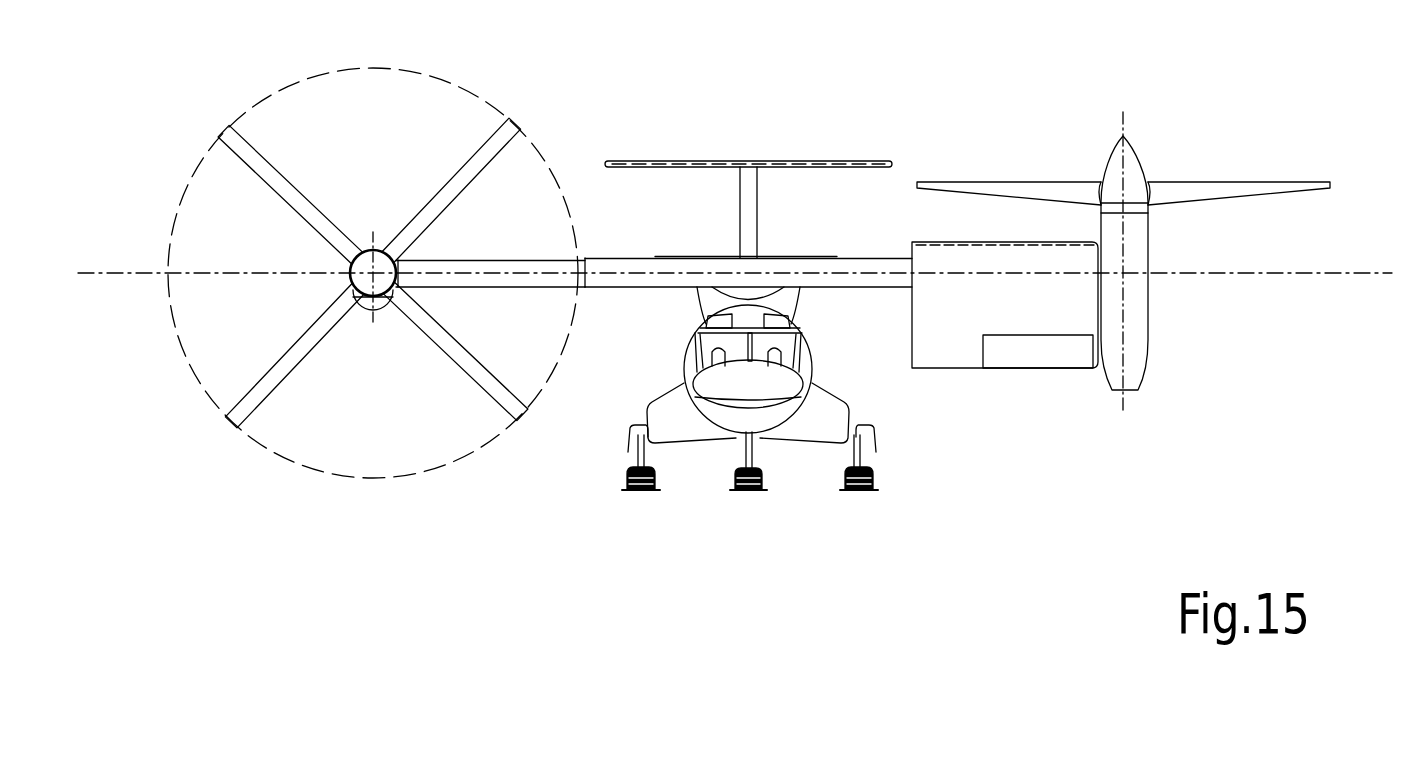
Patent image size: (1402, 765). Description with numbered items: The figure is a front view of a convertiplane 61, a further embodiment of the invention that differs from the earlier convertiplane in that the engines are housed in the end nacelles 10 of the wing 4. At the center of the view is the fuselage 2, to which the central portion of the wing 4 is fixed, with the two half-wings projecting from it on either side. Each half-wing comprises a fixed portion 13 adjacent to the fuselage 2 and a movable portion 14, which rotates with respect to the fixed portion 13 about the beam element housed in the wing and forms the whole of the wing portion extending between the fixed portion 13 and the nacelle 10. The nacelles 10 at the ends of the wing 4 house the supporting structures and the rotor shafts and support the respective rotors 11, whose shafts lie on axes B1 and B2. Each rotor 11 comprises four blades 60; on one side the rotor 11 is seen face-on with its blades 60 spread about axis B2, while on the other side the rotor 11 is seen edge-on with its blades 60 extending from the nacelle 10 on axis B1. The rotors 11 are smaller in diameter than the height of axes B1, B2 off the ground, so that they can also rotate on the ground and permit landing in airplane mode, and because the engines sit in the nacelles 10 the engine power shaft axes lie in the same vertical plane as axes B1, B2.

The fuselage 2 is at (813, 380).
The wing 4 is at (680, 258).
The nacelle 10 is at (352, 297).
The rotor 11 is at (313, 352).
The fixed portion 13 is at (627, 264).
The movable portion 14 is at (530, 265).
The blade 60 is at (242, 158).
The convertiplane 61 is at (963, 82).
The rotor shaft axis B1 is at (1123, 290).
The rotor shaft axis B2 is at (372, 273).